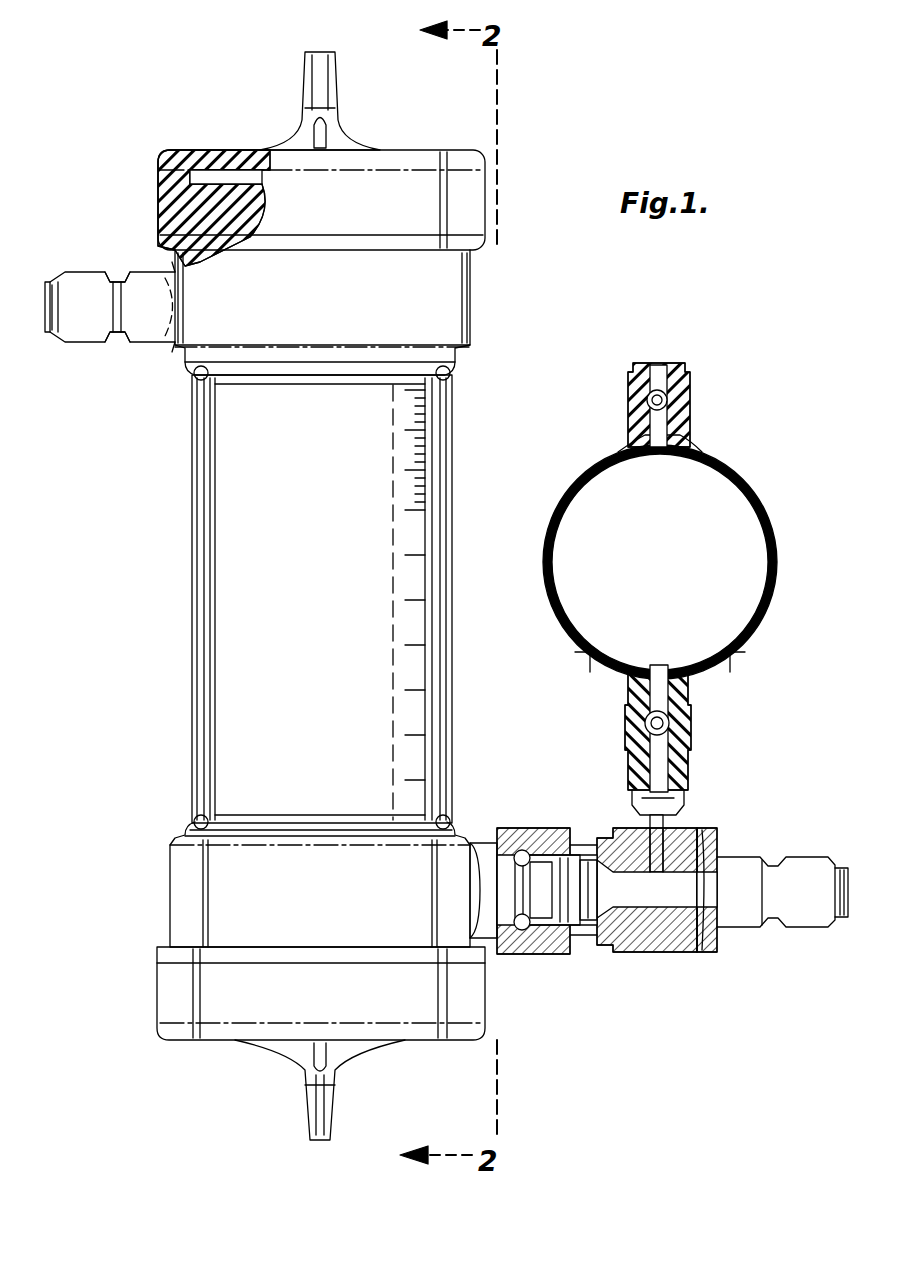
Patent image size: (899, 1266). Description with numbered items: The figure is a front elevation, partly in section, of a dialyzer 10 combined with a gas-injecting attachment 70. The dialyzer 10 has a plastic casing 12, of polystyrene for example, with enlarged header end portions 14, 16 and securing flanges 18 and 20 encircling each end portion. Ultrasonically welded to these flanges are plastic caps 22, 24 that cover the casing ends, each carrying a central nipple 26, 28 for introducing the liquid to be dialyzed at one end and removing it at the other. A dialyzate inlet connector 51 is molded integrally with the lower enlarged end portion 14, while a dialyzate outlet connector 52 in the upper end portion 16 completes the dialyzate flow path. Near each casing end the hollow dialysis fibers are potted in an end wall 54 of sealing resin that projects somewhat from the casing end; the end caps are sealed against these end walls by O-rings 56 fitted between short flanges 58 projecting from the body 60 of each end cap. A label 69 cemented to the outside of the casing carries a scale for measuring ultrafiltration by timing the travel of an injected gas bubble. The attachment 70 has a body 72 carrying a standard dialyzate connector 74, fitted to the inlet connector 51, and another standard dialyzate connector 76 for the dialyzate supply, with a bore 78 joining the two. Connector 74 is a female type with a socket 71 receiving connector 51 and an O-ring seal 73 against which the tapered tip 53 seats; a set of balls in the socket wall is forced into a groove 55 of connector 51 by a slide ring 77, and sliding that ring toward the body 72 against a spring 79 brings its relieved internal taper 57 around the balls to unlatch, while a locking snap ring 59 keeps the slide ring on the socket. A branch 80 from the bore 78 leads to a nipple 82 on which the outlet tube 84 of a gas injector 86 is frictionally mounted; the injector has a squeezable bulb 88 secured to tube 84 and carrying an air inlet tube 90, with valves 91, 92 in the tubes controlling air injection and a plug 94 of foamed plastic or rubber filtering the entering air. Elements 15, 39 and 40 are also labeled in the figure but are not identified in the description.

The dialyzer 10 is at (478, 492).
The plastic casing 12 is at (200, 696).
The enlarged header end portion 14 is at (175, 887).
The socket 15 is at (512, 958).
The enlarged header end portion 16 is at (190, 352).
The securing flange 18 is at (175, 954).
The securing flange 20 is at (165, 240).
The plastic cap 22 is at (168, 1000).
The plastic cap 24 is at (160, 190).
The central nipple 26 is at (320, 1108).
The central nipple 28 is at (320, 75).
The cap groove 39 is at (320, 238).
The cap flange 40 is at (322, 228).
The dialyzate inlet connector 51 is at (500, 832).
The dialyzate outlet connector 52 is at (78, 342).
The tapered tip 53 is at (58, 280).
The end wall 54 is at (280, 175).
The groove 55 is at (120, 282).
The O-ring 56 is at (188, 152).
The relieved internal taper 57 is at (520, 850).
The short flanges 58 is at (230, 152).
The locking snap ring 59 is at (505, 924).
The body of end cap 60 is at (252, 152).
The label 69 is at (405, 378).
The gas-injecting attachment 70 is at (612, 438).
The socket 71 is at (575, 870).
The body 72 is at (640, 955).
The O-ring seal 73 is at (583, 955).
The standard dialyzate connector 74 is at (540, 955).
The standard dialyzate connector 76 is at (795, 930).
The slide ring 77 is at (528, 848).
The bore 78 is at (662, 965).
The spring 79 is at (568, 838).
The branch 80 is at (716, 841).
The nipple 82 is at (686, 810).
The outlet tube 84 is at (690, 764).
The gas injector 86 is at (768, 635).
The squeezable bulb 88 is at (546, 618).
The air inlet tube 90 is at (692, 390).
The valve 91 is at (670, 724).
The valve 92 is at (668, 404).
The plug 94 is at (660, 365).